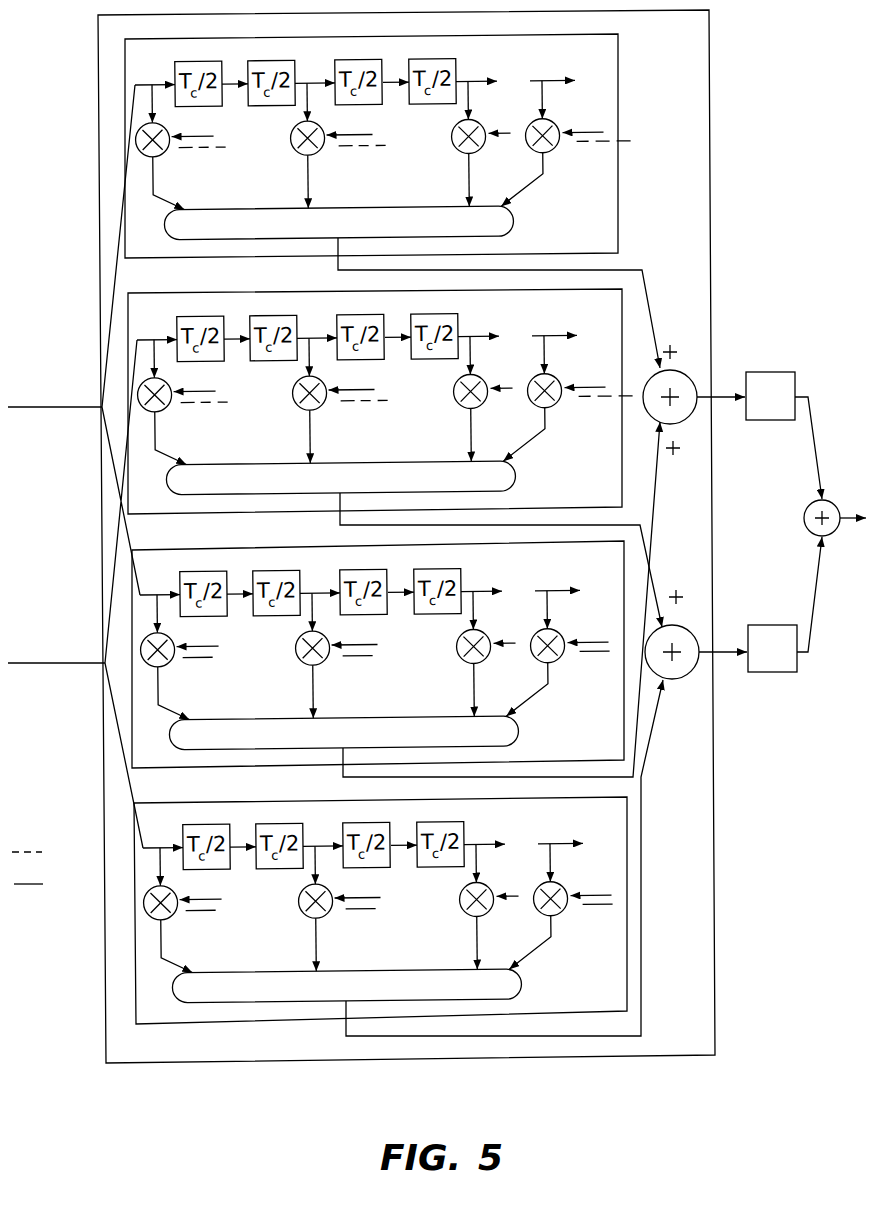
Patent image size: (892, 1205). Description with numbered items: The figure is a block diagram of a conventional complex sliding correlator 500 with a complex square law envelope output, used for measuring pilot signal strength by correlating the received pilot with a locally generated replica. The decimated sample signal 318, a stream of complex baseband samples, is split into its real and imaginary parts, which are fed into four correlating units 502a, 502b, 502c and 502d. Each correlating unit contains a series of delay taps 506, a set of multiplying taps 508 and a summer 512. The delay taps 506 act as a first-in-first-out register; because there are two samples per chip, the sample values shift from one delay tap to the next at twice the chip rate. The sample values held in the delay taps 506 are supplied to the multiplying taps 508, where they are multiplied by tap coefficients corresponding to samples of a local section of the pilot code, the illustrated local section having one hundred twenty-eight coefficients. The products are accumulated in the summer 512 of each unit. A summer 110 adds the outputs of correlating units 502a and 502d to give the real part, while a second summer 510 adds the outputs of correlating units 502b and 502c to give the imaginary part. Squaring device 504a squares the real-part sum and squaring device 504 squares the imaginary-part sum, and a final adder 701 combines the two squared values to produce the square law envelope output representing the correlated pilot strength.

The complex sliding correlator 500 is at (580, 1057).
The decimated sample signal 318 is at (68, 340).
The correlating unit 502a is at (619, 92).
The correlating unit 502b is at (156, 293).
The correlating unit 502c is at (160, 550).
The correlating unit 502d is at (163, 803).
The delay tap 506 is at (443, 62).
The multiplying tap 508 is at (552, 151).
The summer 512 is at (513, 225).
The summer 110 is at (677, 383).
The summer 510 is at (681, 666).
The squaring device 504a is at (764, 372).
The squaring device 504 is at (765, 673).
The output adder 701 is at (804, 522).